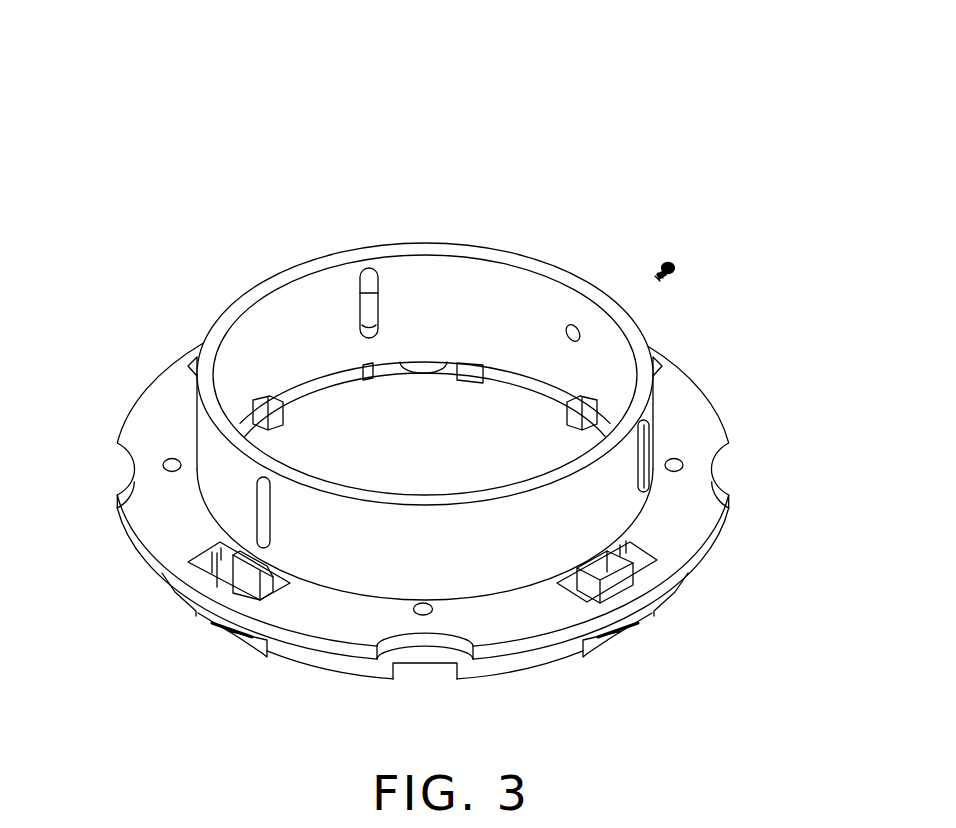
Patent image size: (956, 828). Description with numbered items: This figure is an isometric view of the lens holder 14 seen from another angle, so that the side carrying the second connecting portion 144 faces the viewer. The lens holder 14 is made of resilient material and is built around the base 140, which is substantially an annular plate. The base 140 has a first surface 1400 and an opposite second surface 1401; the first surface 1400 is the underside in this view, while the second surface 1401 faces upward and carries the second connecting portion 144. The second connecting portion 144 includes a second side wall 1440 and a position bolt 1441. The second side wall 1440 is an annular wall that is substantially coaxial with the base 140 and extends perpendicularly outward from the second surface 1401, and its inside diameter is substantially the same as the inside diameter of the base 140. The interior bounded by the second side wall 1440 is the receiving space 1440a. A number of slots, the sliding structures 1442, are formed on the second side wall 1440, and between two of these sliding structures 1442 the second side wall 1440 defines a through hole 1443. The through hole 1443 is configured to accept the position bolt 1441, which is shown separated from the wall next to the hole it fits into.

The lens holder 14 is at (478, 58).
The base 140 is at (700, 557).
The first surface 1400 is at (553, 648).
The second surface 1401 is at (685, 410).
The second connecting portion 144 is at (545, 236).
The second side wall 1440 is at (315, 308).
The receiving space 1440a is at (430, 267).
The position bolt 1441 is at (676, 266).
The sliding structures 1442 is at (260, 507).
The through hole 1443 is at (580, 333).